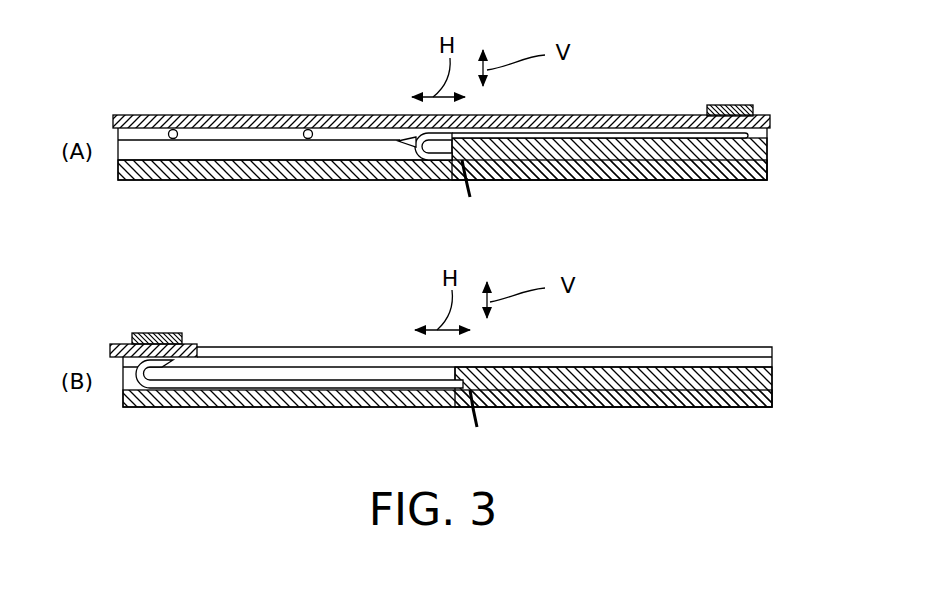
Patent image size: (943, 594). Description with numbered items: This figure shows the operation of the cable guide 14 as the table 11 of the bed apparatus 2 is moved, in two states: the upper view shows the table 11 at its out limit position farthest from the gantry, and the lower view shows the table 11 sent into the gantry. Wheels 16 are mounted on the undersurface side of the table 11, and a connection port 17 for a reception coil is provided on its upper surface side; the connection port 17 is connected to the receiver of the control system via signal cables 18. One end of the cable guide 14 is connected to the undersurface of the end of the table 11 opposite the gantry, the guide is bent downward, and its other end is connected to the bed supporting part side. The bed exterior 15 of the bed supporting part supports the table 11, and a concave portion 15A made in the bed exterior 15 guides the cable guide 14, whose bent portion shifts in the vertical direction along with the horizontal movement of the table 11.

The bed apparatus 2 is at (597, 66).
The table 11 is at (607, 117).
The cable guide 14 is at (416, 140).
The bed exterior 15 is at (768, 152).
The concave portion 15A is at (222, 156).
The wheels 16 is at (290, 133).
The connection port 17 is at (736, 105).
The signal cables 18 is at (473, 195).